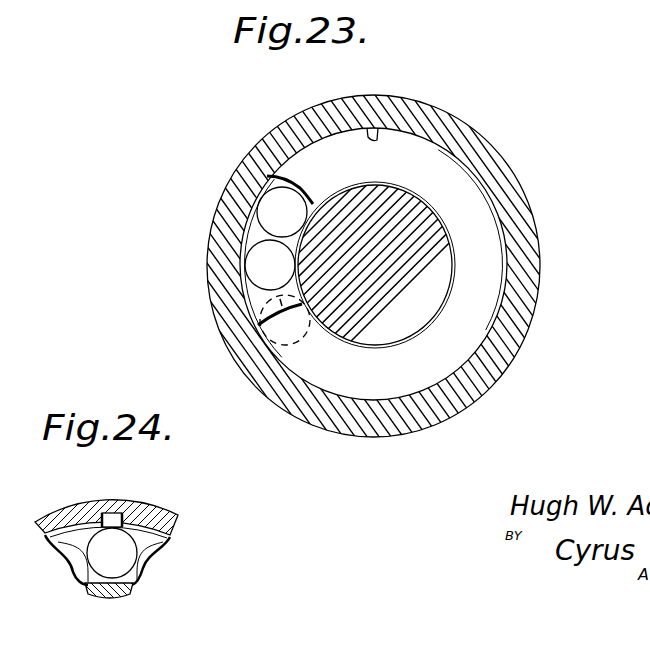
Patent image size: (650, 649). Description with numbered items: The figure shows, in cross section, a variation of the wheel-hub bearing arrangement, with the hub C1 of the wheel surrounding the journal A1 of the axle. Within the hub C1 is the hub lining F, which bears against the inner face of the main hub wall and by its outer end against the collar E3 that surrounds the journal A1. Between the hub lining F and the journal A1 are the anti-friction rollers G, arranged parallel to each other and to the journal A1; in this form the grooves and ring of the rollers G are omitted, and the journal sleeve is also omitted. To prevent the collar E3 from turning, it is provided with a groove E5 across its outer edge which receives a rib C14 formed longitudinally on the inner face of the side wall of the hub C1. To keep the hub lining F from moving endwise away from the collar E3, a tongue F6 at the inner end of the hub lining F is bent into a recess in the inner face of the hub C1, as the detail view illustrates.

In FIG. 23, the hub of the wheel C1 is at (512, 198).
In FIG. 24, the hub of the wheel C1 is at (169, 512).
In FIG. 23, the rib C14 is at (375, 132).
In FIG. 23, the groove E5 is at (372, 140).
In FIG. 23, the collar E3 is at (494, 240).
In FIG. 23, the journal A1 is at (430, 273).
In FIG. 24, the journal A1 is at (120, 597).
In FIG. 23, the hub lining F is at (258, 226).
In FIG. 24, the hub lining F is at (156, 550).
In FIG. 23, the anti-friction rollers G is at (262, 270).
In FIG. 24, the anti-friction rollers G is at (112, 553).
In FIG. 24, the tongue F6 is at (118, 512).